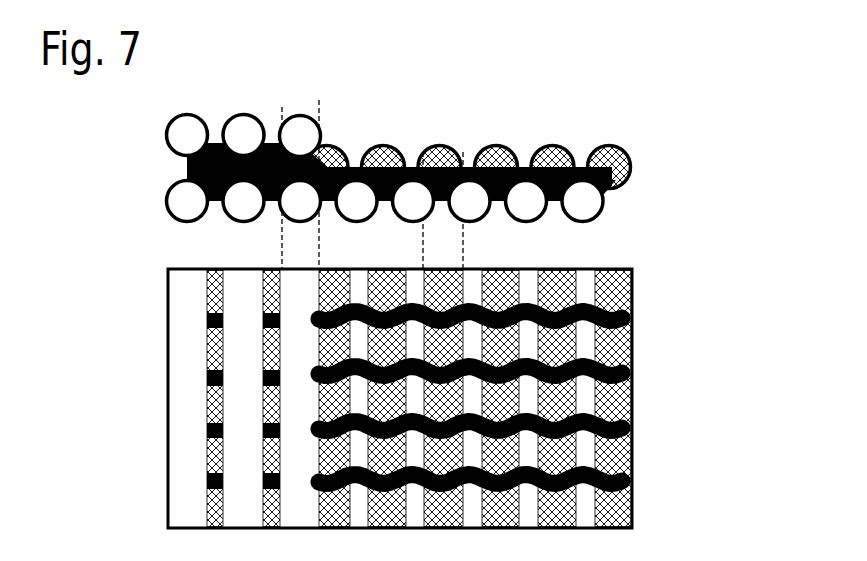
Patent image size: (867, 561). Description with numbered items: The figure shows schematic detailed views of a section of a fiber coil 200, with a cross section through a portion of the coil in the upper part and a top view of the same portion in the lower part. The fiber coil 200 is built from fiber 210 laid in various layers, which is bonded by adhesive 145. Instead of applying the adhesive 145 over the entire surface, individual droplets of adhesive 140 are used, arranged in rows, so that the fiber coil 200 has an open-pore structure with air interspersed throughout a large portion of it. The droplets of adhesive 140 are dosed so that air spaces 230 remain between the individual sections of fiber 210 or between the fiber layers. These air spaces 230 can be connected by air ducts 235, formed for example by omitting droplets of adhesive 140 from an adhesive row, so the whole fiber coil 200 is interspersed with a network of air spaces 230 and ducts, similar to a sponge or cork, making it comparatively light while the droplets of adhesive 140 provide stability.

The fiber coil 200 is at (419, 90).
The fiber 210 is at (167, 137).
The air spaces 230 is at (243, 172).
The air ducts 235 is at (217, 195).
The adhesive 145 is at (322, 157).
The droplets of adhesive 140 is at (617, 312).